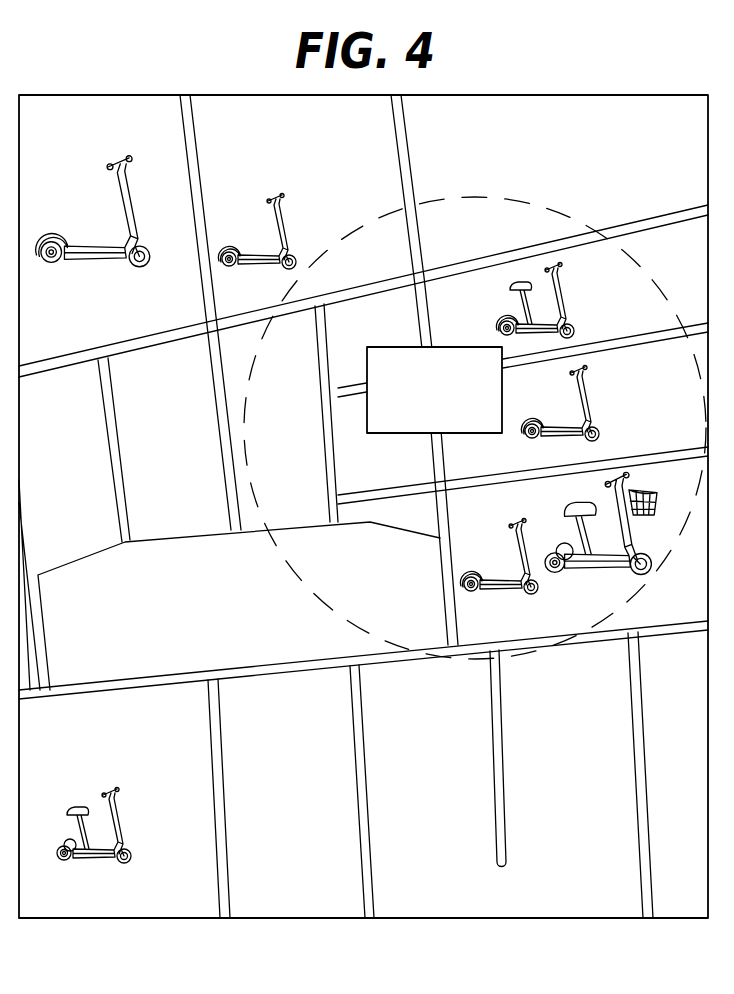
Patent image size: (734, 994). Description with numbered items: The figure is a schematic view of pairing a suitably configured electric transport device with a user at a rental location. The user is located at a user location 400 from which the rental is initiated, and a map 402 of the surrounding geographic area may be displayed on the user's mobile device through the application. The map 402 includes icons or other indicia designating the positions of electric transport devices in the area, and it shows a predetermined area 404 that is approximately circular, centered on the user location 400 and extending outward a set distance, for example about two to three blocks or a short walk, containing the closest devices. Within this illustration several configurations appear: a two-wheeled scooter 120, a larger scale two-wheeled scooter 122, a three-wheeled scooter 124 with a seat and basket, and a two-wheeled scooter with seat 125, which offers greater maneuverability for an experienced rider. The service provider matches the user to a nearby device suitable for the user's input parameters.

The two-wheeled scooter 120 is at (283, 215).
The larger scale two-wheeled scooter 122 is at (125, 208).
The three-wheeled scooter 124 is at (607, 565).
The two-wheeled scooter with seat 125 is at (564, 289).
The user location 400 is at (398, 347).
The map 402 is at (603, 95).
The predetermined area 404 is at (532, 198).